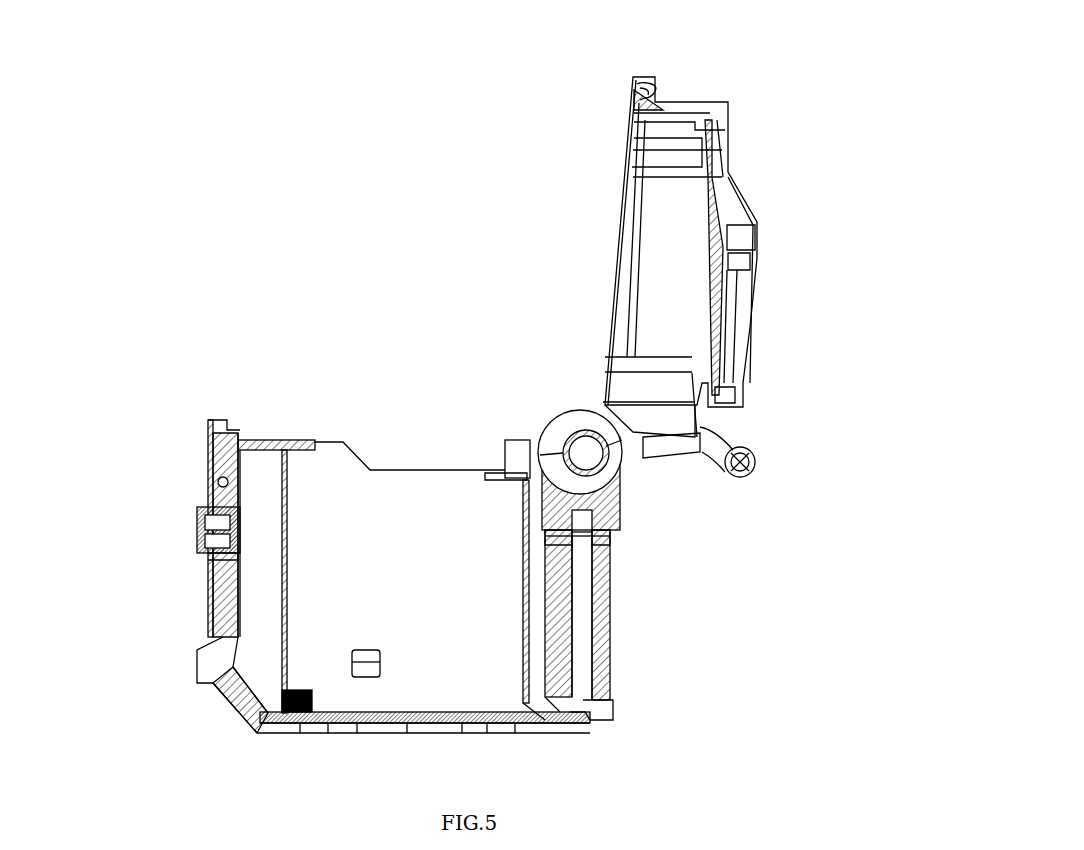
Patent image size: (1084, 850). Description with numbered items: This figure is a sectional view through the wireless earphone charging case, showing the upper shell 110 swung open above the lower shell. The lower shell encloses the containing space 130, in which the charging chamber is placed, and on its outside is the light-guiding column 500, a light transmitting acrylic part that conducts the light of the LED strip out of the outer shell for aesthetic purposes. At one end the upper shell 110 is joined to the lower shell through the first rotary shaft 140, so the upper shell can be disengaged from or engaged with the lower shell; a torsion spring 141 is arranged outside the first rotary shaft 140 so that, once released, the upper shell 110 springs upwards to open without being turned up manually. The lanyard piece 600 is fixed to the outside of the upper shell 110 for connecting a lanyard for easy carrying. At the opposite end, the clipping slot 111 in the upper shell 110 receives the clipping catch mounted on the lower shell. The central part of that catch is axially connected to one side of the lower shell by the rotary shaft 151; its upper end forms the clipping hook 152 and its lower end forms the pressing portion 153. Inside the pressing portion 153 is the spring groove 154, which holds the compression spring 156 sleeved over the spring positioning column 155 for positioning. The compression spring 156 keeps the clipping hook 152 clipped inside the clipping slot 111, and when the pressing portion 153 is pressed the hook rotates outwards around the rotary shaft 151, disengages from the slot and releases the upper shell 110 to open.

The upper shell 110 is at (620, 221).
The clipping slot 111 is at (624, 117).
The containing space 130 is at (388, 505).
The first rotary shaft 140 is at (585, 455).
The torsion spring 141 is at (608, 440).
The rotary shaft 151 is at (221, 480).
The clipping hook 152 is at (217, 416).
The pressing portion 153 is at (199, 524).
The spring groove 154 is at (198, 554).
The spring positioning column 155 is at (215, 567).
The compression spring 156 is at (198, 535).
The light-guiding column 500 is at (597, 623).
The lanyard piece 600 is at (746, 478).